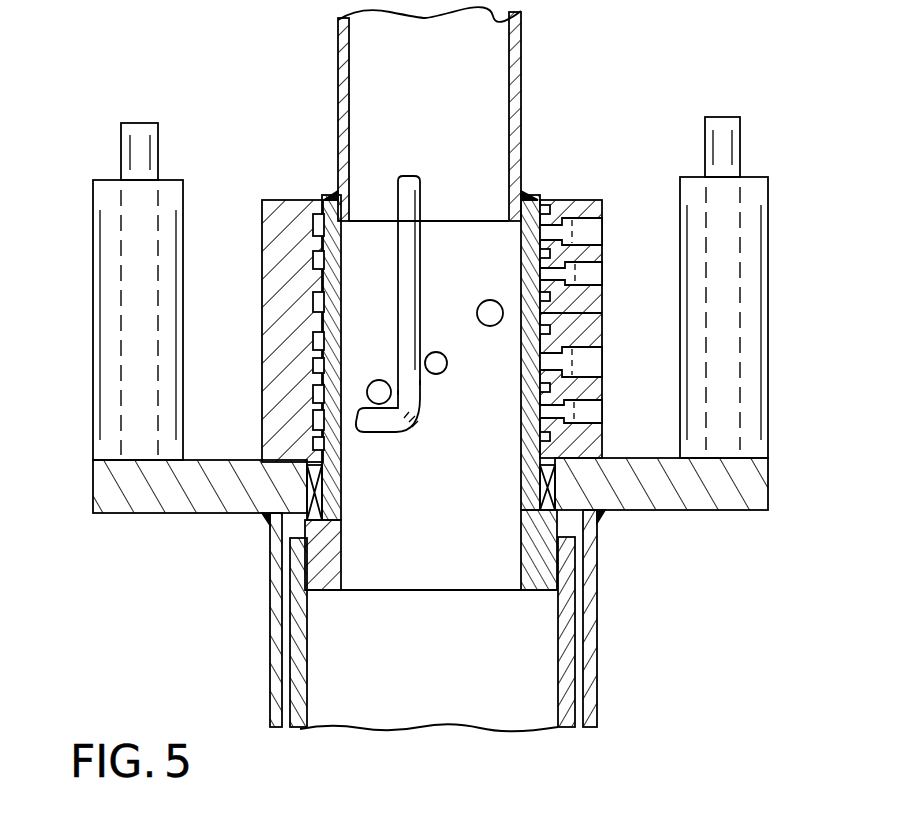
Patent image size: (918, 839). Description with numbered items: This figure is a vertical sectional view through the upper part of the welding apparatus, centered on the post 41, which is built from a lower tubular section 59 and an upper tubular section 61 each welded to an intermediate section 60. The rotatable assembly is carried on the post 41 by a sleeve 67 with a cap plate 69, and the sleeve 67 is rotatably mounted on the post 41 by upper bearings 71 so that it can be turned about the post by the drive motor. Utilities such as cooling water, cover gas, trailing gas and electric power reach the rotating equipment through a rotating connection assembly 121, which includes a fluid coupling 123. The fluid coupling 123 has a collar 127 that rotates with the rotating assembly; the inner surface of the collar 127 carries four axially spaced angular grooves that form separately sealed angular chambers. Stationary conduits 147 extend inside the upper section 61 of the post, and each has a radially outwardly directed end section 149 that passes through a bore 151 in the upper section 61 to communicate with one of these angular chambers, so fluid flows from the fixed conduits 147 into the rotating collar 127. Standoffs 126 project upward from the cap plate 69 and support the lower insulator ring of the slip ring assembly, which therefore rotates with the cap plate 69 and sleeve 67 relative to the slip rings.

The post 41 is at (338, 660).
The lower tubular section 59 is at (568, 668).
The housing 60 is at (521, 524).
The upper tubular section 61 is at (528, 82).
The sleeve 67 is at (600, 590).
The cap plate 69 is at (682, 502).
The upper bearings 71 is at (545, 493).
The rotating connection assembly 121 is at (658, 118).
The fluid coupling 123 is at (572, 195).
The standoffs 126 is at (128, 157).
The collar 127 is at (283, 200).
The stationary conduits 147 is at (413, 207).
The radially outwardly directed end section 149 is at (381, 434).
The bore 151 is at (357, 408).